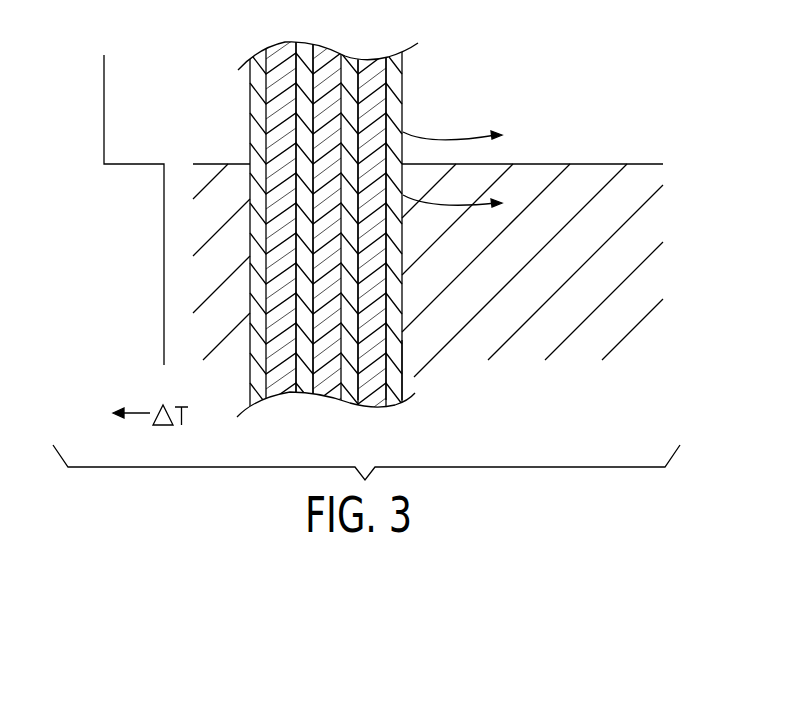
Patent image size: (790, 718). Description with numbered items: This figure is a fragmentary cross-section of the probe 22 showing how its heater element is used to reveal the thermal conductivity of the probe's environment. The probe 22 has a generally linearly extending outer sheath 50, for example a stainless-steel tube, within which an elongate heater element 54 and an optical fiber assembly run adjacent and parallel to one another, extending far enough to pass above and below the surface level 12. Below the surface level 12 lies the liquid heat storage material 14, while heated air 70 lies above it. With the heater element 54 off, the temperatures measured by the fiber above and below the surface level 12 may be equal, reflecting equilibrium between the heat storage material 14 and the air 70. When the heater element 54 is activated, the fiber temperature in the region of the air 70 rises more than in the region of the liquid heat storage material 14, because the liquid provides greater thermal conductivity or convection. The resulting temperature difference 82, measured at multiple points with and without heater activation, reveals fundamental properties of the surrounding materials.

The surface level 12 is at (532, 163).
The liquid heat storage material 14 is at (573, 268).
The probe 22 is at (405, 342).
The outer sheath 50 is at (357, 224).
The heater element 54 is at (377, 58).
The heated air 70 is at (525, 124).
The temperature difference (delta T) 82 is at (104, 109).